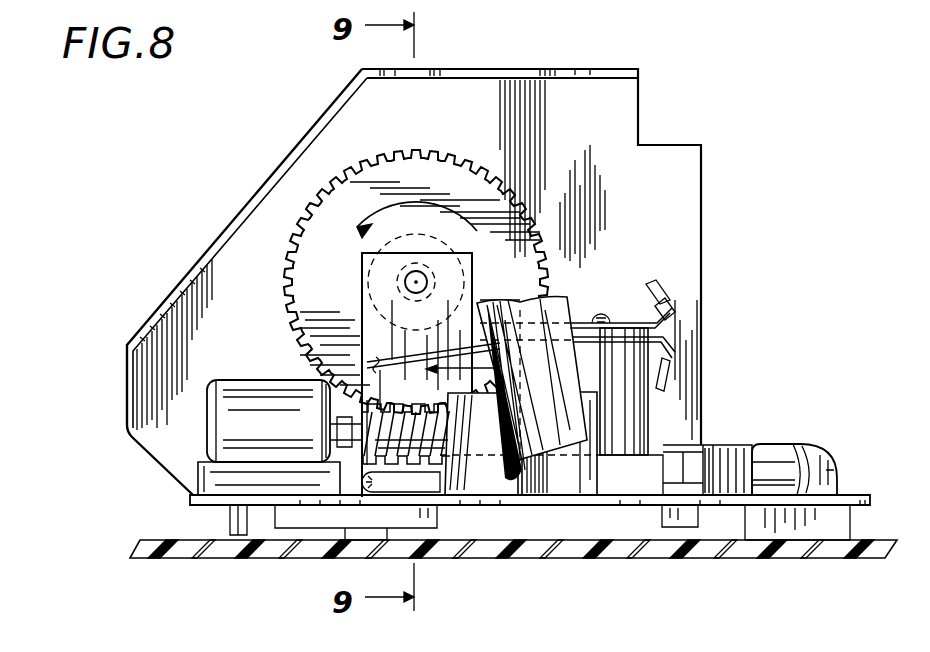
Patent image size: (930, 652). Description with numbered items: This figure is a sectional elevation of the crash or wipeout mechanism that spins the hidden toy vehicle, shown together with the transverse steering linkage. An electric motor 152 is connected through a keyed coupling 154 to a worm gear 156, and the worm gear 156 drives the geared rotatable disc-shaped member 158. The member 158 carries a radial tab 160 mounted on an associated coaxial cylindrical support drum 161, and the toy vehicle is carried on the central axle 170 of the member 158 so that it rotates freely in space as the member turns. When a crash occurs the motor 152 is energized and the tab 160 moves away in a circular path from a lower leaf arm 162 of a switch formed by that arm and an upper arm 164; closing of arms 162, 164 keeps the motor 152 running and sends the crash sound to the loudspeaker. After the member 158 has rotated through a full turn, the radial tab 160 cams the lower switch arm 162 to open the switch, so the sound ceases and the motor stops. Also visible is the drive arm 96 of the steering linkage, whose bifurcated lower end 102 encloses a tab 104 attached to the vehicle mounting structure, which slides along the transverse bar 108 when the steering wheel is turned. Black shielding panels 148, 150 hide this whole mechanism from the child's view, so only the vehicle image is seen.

The drive arm 96 is at (565, 301).
The lower end of drive arm 102 is at (595, 505).
The tab 104 is at (572, 381).
The bar 108 is at (773, 470).
The shielding panel 148 is at (232, 233).
The shielding panel 150 is at (611, 69).
The electric motor 152 is at (228, 384).
The keyed coupling 154 is at (333, 418).
The worm gear 156 is at (447, 506).
The geared rotatable disc-shaped member 158 is at (518, 200).
The radial tab 160 is at (363, 340).
The cylindrical support drum 161 is at (369, 242).
The lower leaf arm 162 is at (318, 372).
The upper arm 164 is at (632, 322).
The central axle 170 is at (427, 280).